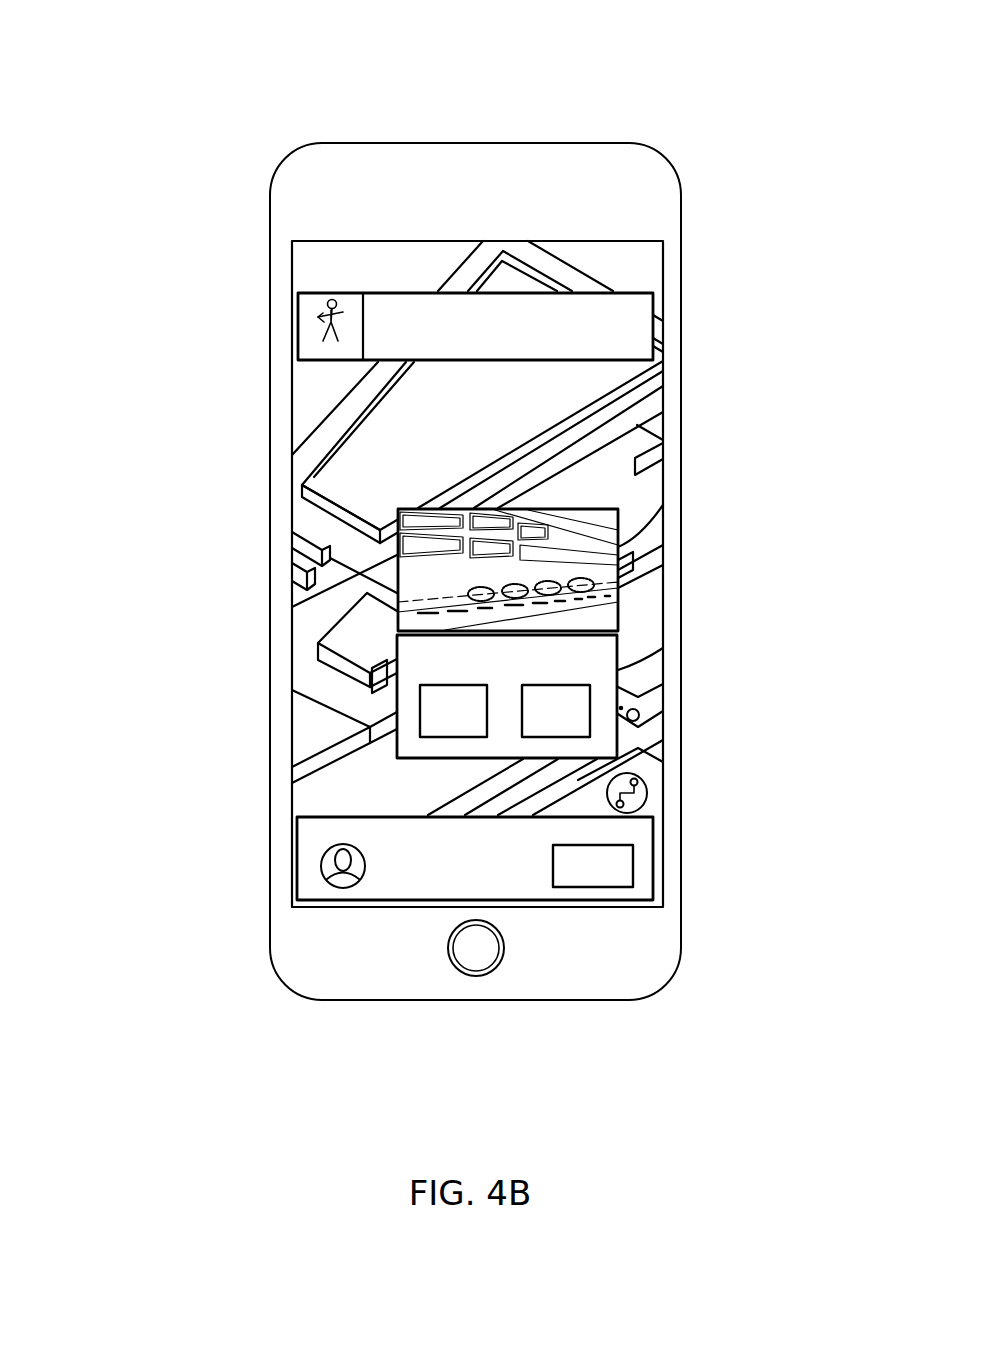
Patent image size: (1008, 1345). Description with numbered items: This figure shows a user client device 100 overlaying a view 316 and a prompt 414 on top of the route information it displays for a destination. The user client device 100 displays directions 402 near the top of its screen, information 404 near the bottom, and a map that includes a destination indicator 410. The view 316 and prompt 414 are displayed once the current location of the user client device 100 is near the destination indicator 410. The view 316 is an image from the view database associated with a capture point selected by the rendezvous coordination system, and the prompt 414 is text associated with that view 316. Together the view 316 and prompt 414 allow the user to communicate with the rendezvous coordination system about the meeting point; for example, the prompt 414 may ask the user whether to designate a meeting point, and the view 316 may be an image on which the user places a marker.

The user client device 100 is at (593, 143).
The directions 402 is at (297, 297).
The information 404 is at (297, 860).
The view 316 is at (618, 547).
The prompt 414 is at (620, 670).
The destination indicator 410 is at (640, 713).